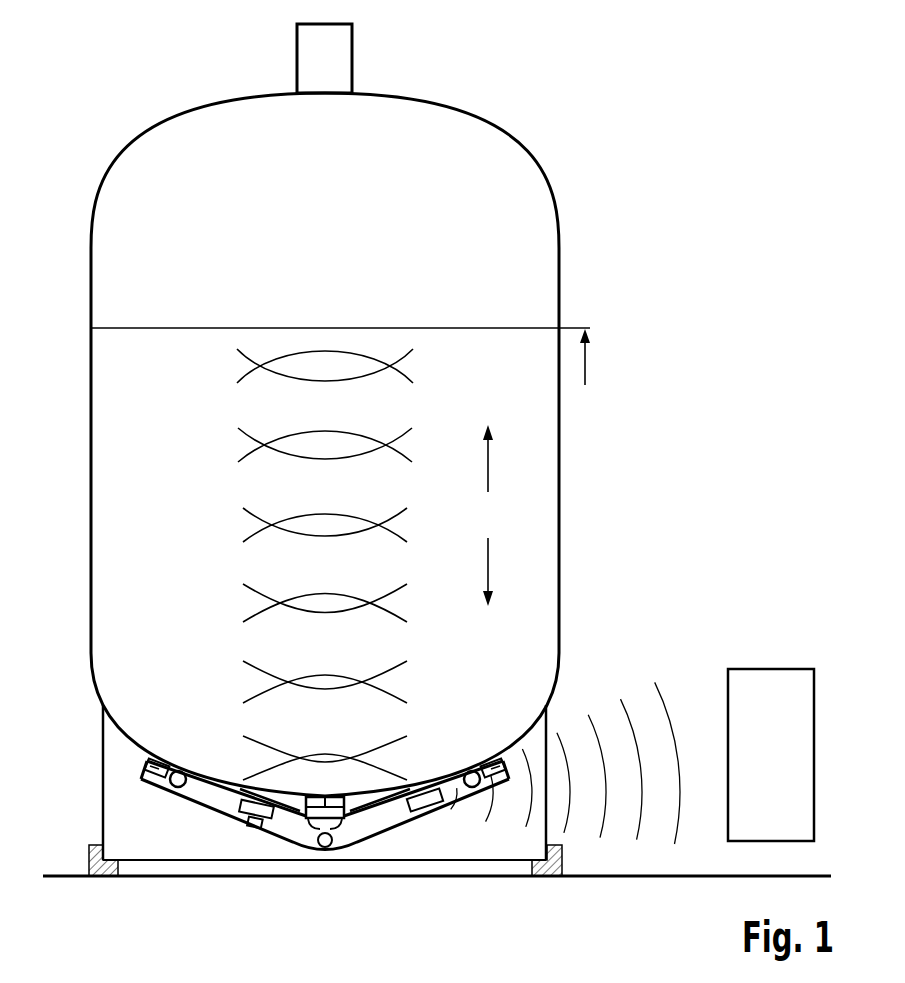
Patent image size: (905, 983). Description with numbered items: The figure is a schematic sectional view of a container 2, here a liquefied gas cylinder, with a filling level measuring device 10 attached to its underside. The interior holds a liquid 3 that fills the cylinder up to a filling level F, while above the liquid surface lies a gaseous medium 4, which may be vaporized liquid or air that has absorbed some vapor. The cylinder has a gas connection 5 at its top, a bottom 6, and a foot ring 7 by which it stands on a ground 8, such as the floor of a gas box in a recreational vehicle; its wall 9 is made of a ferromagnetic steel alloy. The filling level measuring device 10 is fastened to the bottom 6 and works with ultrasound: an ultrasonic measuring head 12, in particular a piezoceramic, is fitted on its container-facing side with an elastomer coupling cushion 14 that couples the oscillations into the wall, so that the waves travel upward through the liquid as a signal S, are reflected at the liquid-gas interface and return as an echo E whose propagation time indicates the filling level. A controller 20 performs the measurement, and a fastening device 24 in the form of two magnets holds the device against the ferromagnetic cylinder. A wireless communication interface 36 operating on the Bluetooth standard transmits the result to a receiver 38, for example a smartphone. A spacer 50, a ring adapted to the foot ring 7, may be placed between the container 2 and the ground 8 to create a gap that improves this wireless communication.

The container 2 is at (534, 109).
The liquid 3 is at (153, 421).
The gaseous medium 4 is at (316, 225).
The gas connection 5 is at (352, 57).
The bottom 6 is at (127, 738).
The foot ring 7 is at (102, 803).
The ground 8 is at (690, 875).
The wall 9 is at (560, 258).
The filling level measuring device 10 is at (189, 822).
The ultrasonic measuring head 12 is at (310, 819).
The coupling cushion 14 is at (332, 847).
The controller 20 is at (240, 821).
The fastening device 24 is at (147, 760).
The communication interface 36 is at (423, 807).
The receiver 38 is at (770, 669).
The spacer 50 is at (551, 877).
The filling level F is at (585, 365).
The signal S is at (488, 465).
The echo E is at (488, 565).